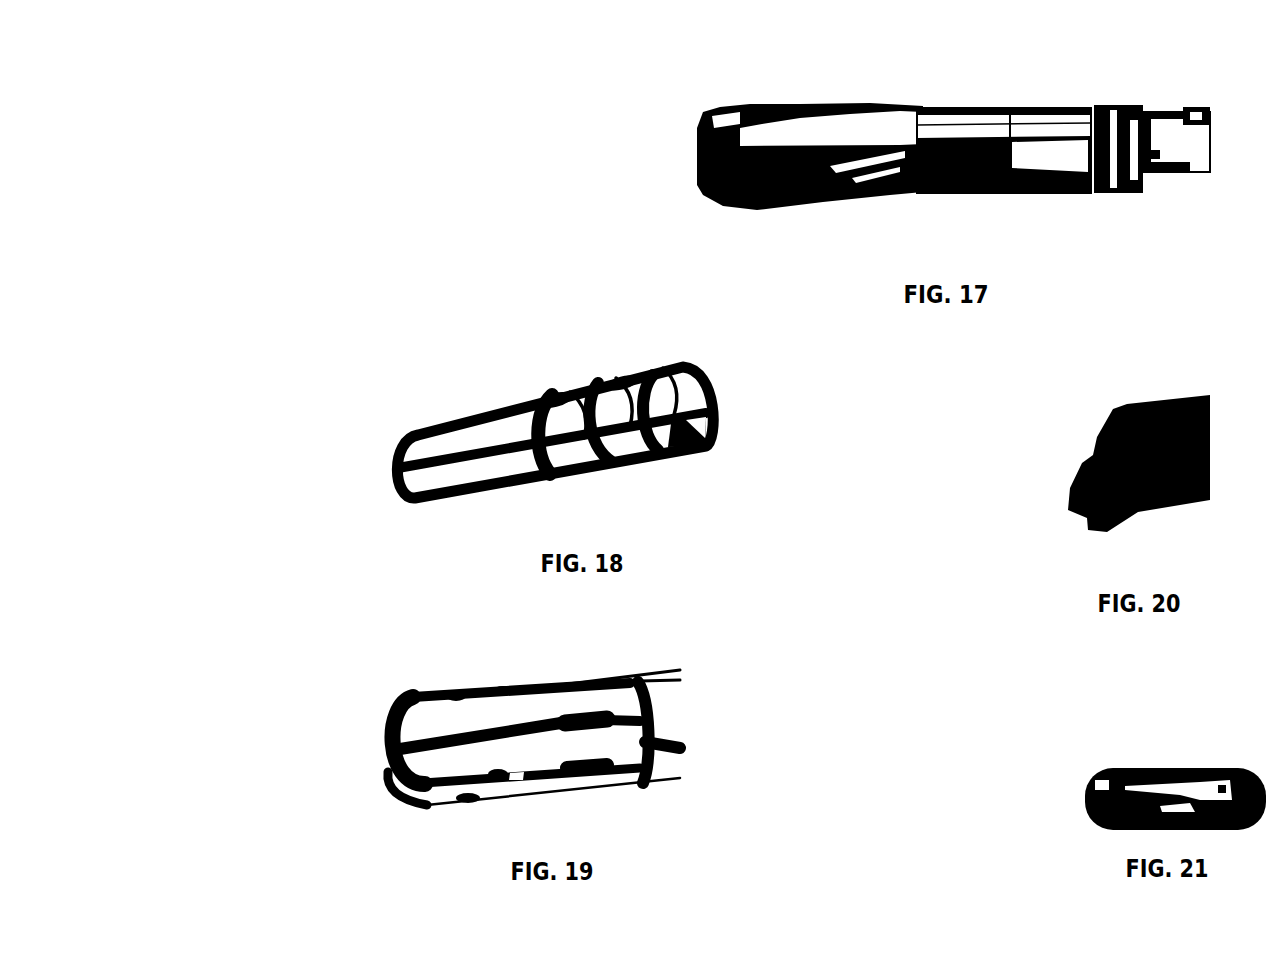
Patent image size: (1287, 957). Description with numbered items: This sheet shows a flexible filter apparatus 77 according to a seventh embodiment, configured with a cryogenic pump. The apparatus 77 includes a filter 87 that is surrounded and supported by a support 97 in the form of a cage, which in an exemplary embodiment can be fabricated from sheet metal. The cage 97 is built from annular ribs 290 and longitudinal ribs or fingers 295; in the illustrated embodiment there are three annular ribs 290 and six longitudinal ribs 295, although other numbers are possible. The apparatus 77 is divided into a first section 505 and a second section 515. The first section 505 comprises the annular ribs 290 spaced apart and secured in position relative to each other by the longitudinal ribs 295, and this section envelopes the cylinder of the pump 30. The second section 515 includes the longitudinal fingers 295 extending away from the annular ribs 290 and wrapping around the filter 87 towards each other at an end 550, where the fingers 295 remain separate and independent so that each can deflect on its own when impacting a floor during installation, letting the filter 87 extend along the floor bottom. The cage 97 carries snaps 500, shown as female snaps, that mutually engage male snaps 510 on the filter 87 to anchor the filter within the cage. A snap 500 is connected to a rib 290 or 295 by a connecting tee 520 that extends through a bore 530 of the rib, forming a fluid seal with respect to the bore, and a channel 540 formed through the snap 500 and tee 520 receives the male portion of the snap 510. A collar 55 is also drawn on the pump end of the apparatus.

In FIG. 17, the flexible filter apparatus 77 is at (938, 155).
In FIG. 17, the filter 87 is at (1004, 154).
In FIG. 21, the filter 87 is at (1175, 764).
In FIG. 17, the support 97 is at (1004, 154).
In FIG. 18, the support 97 is at (530, 406).
In FIG. 19, the support 97 is at (532, 719).
In FIG. 17, the collar 55 is at (1120, 108).
In FIG. 17, the second section 515 is at (826, 208).
In FIG. 17, the first section 505 is at (1046, 208).
In FIG. 17, the pump 30 is at (1190, 181).
In FIG. 18, the longitudinal ribs 295 is at (509, 419).
In FIG. 20, the longitudinal ribs 295 is at (1115, 451).
In FIG. 18, the annular ribs 290 is at (717, 387).
In FIG. 20, the annular ribs 290 is at (1115, 451).
In FIG. 18, the end 550 is at (397, 493).
In FIG. 19, the snaps 500 is at (390, 740).
In FIG. 20, the snaps 500 is at (1104, 478).
In FIG. 20, the connecting tee 520 is at (1104, 454).
In FIG. 20, the channel 540 is at (1104, 463).
In FIG. 20, the bore 530 is at (1090, 470).
In FIG. 21, the snaps 510 is at (1213, 790).